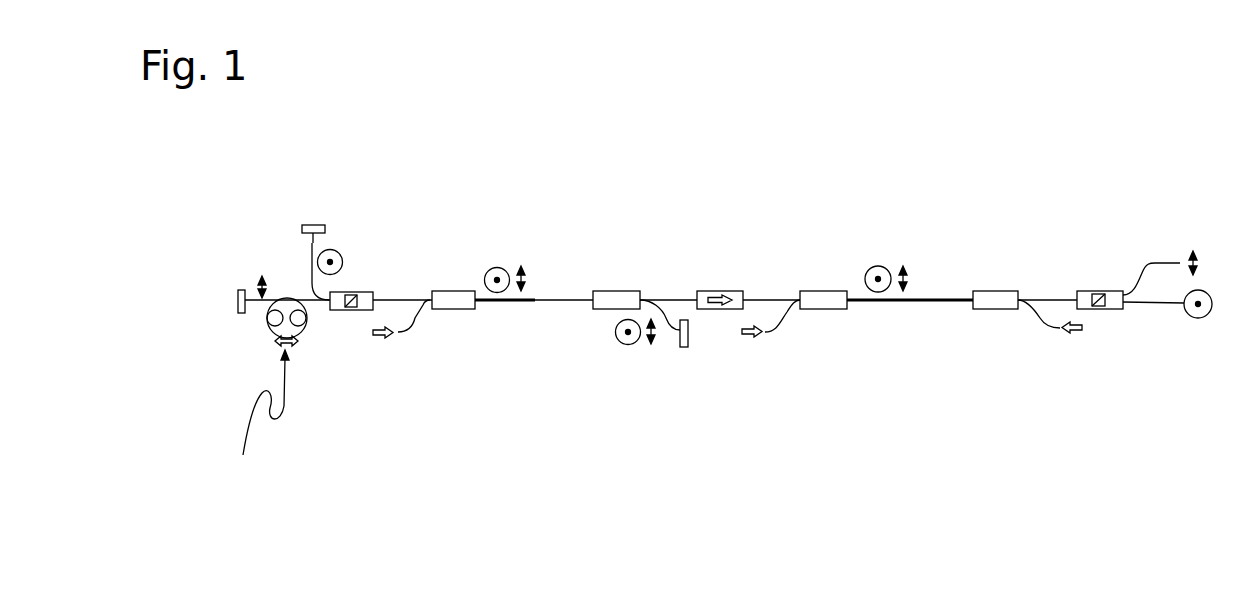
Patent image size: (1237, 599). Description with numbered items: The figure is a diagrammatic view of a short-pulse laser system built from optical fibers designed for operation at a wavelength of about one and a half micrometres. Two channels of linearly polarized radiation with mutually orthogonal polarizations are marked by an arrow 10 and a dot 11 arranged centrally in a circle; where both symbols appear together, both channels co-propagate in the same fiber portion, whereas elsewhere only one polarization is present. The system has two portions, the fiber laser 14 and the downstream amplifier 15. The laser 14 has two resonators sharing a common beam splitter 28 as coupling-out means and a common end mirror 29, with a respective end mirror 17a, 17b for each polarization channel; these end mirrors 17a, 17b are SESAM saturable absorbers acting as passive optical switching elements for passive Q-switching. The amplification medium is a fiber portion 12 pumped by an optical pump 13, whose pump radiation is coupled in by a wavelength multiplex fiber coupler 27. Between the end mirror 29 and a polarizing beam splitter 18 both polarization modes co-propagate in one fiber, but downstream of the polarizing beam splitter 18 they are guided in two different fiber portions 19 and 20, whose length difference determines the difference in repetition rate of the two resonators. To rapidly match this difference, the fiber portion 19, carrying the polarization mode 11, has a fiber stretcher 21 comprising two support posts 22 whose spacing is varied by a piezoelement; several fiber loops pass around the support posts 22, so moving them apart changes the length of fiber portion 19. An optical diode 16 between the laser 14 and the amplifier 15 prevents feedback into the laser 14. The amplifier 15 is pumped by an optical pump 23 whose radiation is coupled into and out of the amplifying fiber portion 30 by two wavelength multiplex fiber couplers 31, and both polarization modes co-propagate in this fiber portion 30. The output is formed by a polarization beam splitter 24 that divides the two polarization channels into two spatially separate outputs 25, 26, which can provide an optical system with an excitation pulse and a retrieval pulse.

The arrow 10 is at (257, 280).
The dot arranged centrally in a circle 11 is at (336, 251).
The fiber portion 12 is at (500, 300).
The optical pump 13 is at (415, 318).
The fiber laser 14 is at (582, 116).
The amplifier 15 is at (888, 205).
The optical diode 16 is at (727, 291).
The end mirror 17a is at (310, 225).
The end mirror 17b is at (237, 313).
The polarizing beam splitter 18 is at (367, 293).
The fiber portion 19 is at (290, 298).
The fiber portion 20 is at (312, 243).
The fiber stretcher 21 is at (259, 420).
The support posts 22 is at (271, 326).
The optical pump 23 is at (1040, 318).
The polarization beam splitter 24 is at (1085, 291).
The output 25 is at (1177, 262).
The output 26 is at (1147, 308).
The wavelength multiplex fiber coupler 27 is at (447, 291).
The beam splitter 28 is at (623, 291).
The end mirror 29 is at (686, 347).
The fiber portion 30 is at (918, 296).
The wavelength multiplex fiber couplers 31 is at (833, 291).